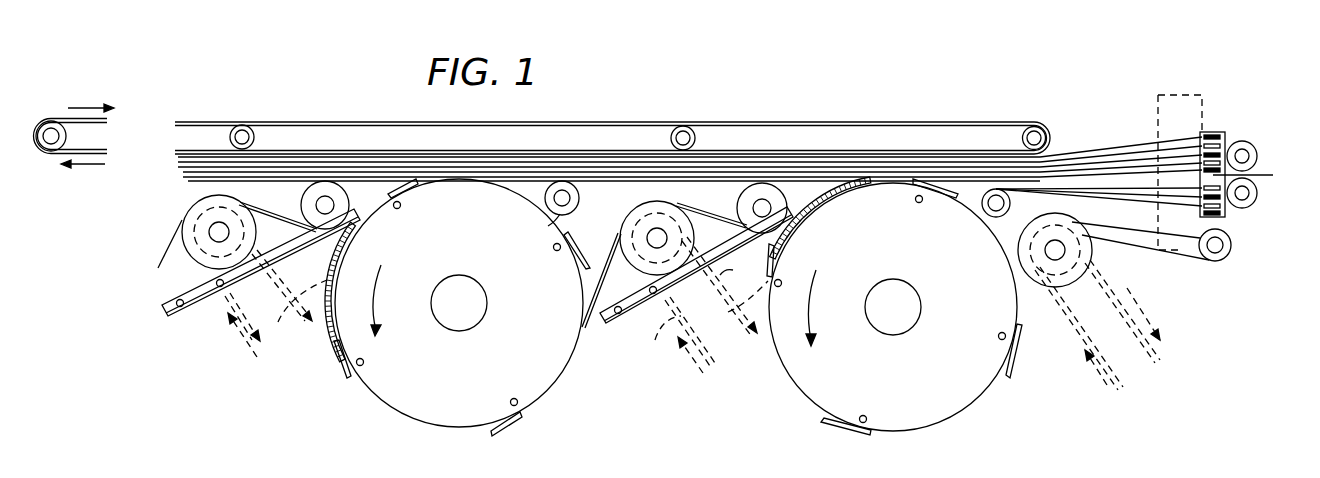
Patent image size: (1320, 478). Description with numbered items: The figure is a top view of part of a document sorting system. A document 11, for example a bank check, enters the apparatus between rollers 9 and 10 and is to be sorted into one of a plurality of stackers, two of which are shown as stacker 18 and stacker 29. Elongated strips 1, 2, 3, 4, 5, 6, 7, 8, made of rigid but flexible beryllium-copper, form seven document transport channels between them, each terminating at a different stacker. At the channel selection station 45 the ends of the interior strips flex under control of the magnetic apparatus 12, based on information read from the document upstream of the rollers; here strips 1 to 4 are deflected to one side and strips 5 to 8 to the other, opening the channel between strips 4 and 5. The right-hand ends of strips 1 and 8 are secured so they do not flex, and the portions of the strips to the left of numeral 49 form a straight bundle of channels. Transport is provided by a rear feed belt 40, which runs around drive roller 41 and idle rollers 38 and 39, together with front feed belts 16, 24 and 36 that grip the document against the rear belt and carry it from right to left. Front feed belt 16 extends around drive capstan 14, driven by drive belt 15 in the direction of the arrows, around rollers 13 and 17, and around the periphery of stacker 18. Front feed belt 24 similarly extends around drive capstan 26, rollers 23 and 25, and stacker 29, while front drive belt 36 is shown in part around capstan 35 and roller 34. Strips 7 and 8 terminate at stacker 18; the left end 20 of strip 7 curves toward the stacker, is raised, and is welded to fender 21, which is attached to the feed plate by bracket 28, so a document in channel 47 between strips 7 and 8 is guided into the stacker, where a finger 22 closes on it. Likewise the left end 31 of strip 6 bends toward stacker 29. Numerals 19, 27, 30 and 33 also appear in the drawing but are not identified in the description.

The elongated strip 1 is at (1084, 157).
The elongated strip 2 is at (1102, 162).
The elongated strip 3 is at (1112, 167).
The elongated strip 4 is at (1130, 172).
The elongated strip 5 is at (1150, 176).
The elongated strip 6 is at (1097, 190).
The elongated strip 7 is at (1118, 193).
The elongated strip 8 is at (1148, 198).
The roller 9 is at (1252, 143).
The roller 10 is at (1252, 208).
The document 11 is at (1268, 172).
The magnetic apparatus 12 is at (1193, 91).
The roller 13 is at (1231, 254).
The drive capstan 14 is at (1072, 282).
The drive belt 15 is at (1165, 357).
The front feed belt 16 is at (1192, 266).
The roller 17 is at (1005, 215).
The stacker 18 is at (968, 407).
The doctor blade 19 is at (838, 428).
The left end of strip 7 20 is at (812, 200).
The fender 21 is at (740, 275).
The finger 22 is at (728, 311).
The roller 23 is at (738, 206).
The front feed belt 24 is at (595, 184).
The roller 25 is at (548, 226).
The drive capstan 26 is at (640, 208).
The web path 27 is at (670, 335).
The bracket 28 is at (613, 327).
The stacker 29 is at (425, 424).
The doctor blade 30 is at (345, 368).
The left end of strip 6 31 is at (385, 196).
The support plate 33 is at (165, 310).
The roller 34 is at (301, 200).
The capstan 35 is at (190, 212).
The front drive belt 36 is at (277, 212).
The idle roller 38 is at (695, 131).
The idle roller 39 is at (253, 128).
The rear feed belt 40 is at (858, 122).
The drive roller 41 is at (62, 134).
The channel selection station 45 is at (1225, 133).
The channel formed by strips 7 and 8 47 is at (792, 278).
The numeral 49 (reference point) 49 is at (1057, 142).